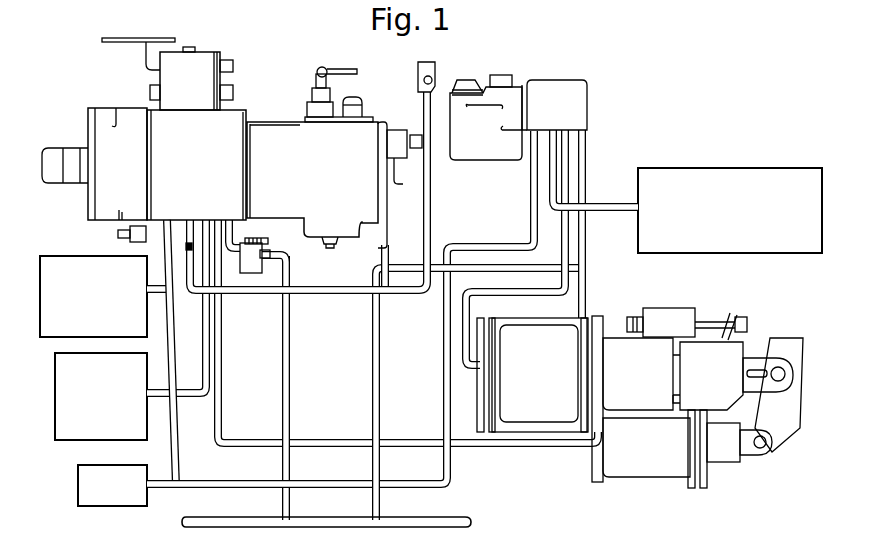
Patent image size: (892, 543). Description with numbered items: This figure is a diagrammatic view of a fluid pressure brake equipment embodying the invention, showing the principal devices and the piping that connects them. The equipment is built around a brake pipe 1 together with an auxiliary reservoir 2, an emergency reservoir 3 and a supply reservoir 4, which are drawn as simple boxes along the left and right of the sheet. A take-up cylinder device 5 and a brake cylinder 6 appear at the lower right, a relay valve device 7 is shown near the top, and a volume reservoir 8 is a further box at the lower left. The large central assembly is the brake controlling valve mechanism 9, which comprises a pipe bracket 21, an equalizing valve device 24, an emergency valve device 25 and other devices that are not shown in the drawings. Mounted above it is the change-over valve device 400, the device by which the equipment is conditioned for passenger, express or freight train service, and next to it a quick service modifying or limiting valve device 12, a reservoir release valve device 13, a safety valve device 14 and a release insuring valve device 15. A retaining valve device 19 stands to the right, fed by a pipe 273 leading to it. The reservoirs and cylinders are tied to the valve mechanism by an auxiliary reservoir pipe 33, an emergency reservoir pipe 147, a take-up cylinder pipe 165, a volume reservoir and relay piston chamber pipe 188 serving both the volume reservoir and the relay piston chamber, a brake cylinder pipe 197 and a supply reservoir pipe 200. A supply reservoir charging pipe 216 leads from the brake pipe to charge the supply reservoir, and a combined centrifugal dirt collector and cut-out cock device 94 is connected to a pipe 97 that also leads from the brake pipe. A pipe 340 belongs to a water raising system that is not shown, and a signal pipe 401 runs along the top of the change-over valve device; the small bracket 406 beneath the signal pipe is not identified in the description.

The brake pipe 1 is at (470, 520).
The auxiliary reservoir 2 is at (61, 434).
The emergency reservoir 3 is at (53, 326).
The supply reservoir 4 is at (720, 172).
The take-up cylinder device 5 is at (643, 465).
The brake cylinder 6 is at (568, 330).
The relay valve device 7 is at (515, 96).
The volume reservoir 8 is at (92, 494).
The brake controlling valve mechanism 9 is at (260, 117).
The quick service modifying or limiting valve device 12 is at (352, 97).
The reservoir release valve device 13 is at (309, 100).
The safety valve device 14 is at (117, 235).
The release insuring valve device 15 is at (395, 132).
The retaining valve device 19 is at (437, 68).
The pipe bracket 21 is at (160, 118).
The equalizing valve device 24 is at (275, 130).
The emergency valve device 25 is at (110, 118).
The auxiliary reservoir pipe 33 is at (206, 346).
The combined centrifugal dirt collector and cut-out cock device 94 is at (288, 262).
The pipe 97 is at (292, 367).
The emergency reservoir pipe 147 is at (165, 297).
The take-up cylinder pipe 165 is at (543, 450).
The volume reservoir and relay piston chamber pipe 188 is at (263, 484).
The brake cylinder pipe 197 is at (589, 143).
The supply reservoir pipe 200 is at (618, 212).
The supply reservoir charging pipe 216 is at (370, 335).
The pipe 273 is at (303, 292).
The pipe of a water raising system 340 is at (190, 250).
The change-over valve device 400 is at (235, 38).
The signal pipe 401 is at (148, 38).
The bracket 406 is at (145, 57).